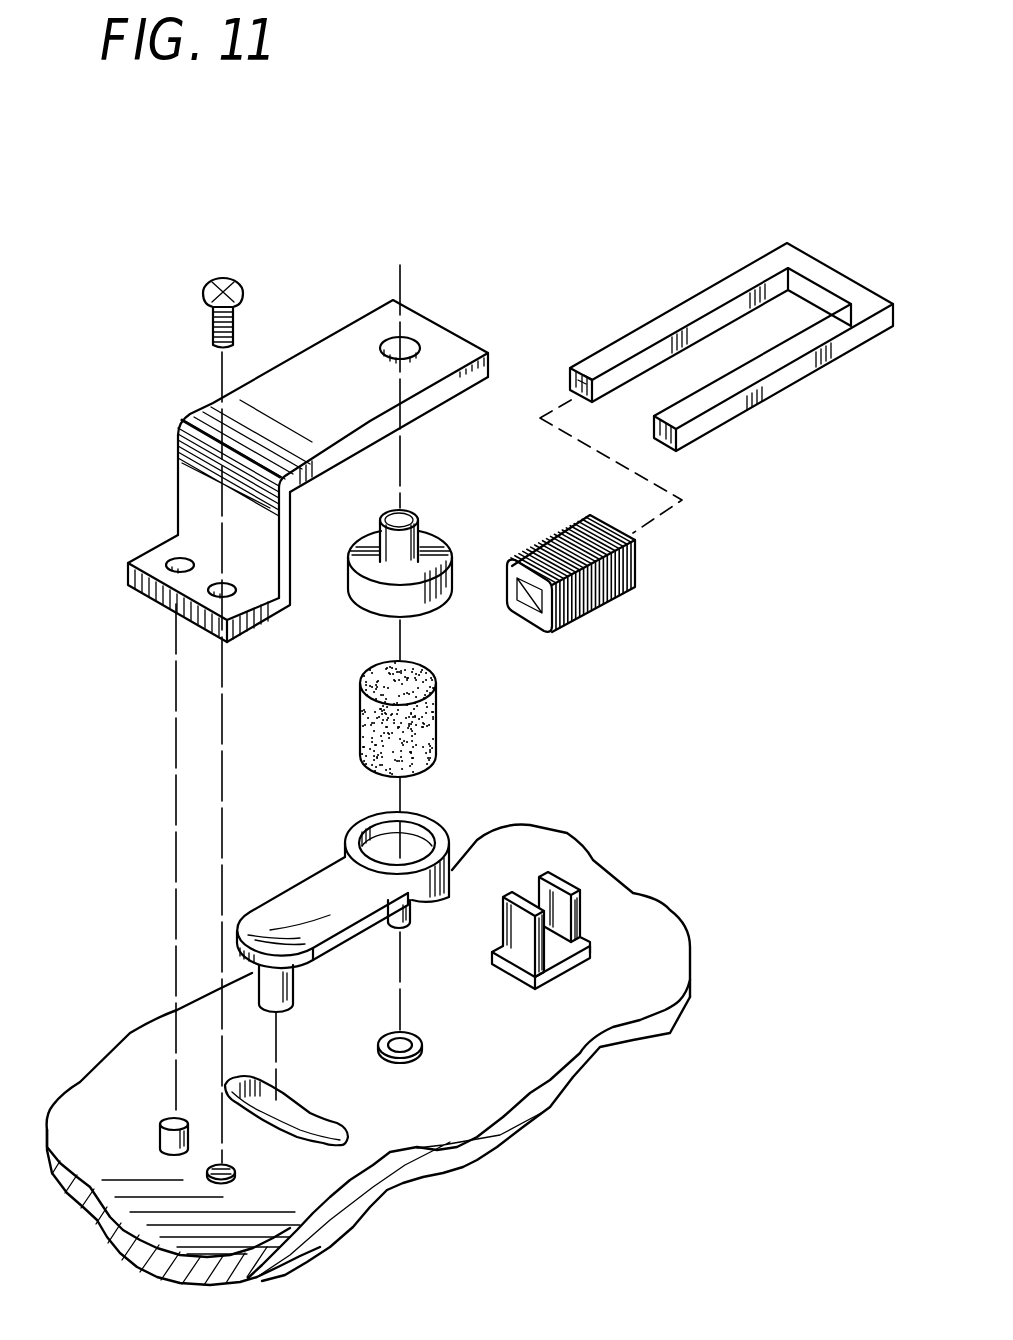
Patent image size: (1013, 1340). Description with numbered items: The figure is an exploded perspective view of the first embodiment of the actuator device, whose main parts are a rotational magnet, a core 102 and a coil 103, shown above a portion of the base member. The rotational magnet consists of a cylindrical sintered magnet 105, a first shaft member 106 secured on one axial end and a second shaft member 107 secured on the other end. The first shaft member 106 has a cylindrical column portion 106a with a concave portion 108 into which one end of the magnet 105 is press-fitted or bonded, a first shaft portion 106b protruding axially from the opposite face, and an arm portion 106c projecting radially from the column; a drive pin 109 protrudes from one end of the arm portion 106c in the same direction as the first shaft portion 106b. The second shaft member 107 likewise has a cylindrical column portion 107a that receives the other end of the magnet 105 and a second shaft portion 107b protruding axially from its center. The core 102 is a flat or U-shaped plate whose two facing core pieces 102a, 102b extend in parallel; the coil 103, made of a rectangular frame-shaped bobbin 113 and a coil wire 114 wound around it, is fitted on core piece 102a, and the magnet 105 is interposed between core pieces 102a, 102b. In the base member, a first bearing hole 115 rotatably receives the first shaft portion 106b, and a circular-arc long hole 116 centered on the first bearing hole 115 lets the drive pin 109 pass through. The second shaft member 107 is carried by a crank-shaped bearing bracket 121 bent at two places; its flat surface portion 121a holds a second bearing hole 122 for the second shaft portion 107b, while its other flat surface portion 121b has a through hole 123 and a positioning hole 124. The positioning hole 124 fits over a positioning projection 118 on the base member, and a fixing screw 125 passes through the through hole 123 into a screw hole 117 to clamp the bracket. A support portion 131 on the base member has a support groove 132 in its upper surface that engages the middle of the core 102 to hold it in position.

The core 102 is at (731, 306).
The core piece 102a is at (618, 350).
The core piece 102b is at (728, 390).
The coil 103 is at (599, 582).
The magnet 105 is at (425, 722).
The first shaft member 106 is at (397, 879).
The cylindrical column portion 106a is at (460, 858).
The first shaft portion 106b is at (406, 924).
The arm portion 106c is at (268, 913).
The second shaft member 107 is at (376, 568).
The cylindrical column portion 107a is at (350, 572).
The second shaft portion 107b is at (404, 508).
The concave portion 108 is at (412, 845).
The drive pin 109 is at (293, 982).
The bobbin 113 is at (561, 617).
The coil wire 114 is at (607, 590).
The first bearing hole 115 is at (413, 1032).
The long hole 116 is at (305, 1118).
The screw hole 117 is at (268, 1160).
The positioning projection 118 is at (165, 1122).
The bearing bracket 121 is at (283, 451).
The flat surface portion 121a is at (333, 357).
The flat surface portion 121b is at (178, 580).
The second bearing hole 122 is at (405, 338).
The through hole 123 is at (222, 597).
The positioning hole 124 is at (178, 572).
The fixing screw 125 is at (226, 278).
The support portion 131 is at (567, 967).
The support groove 132 is at (553, 898).